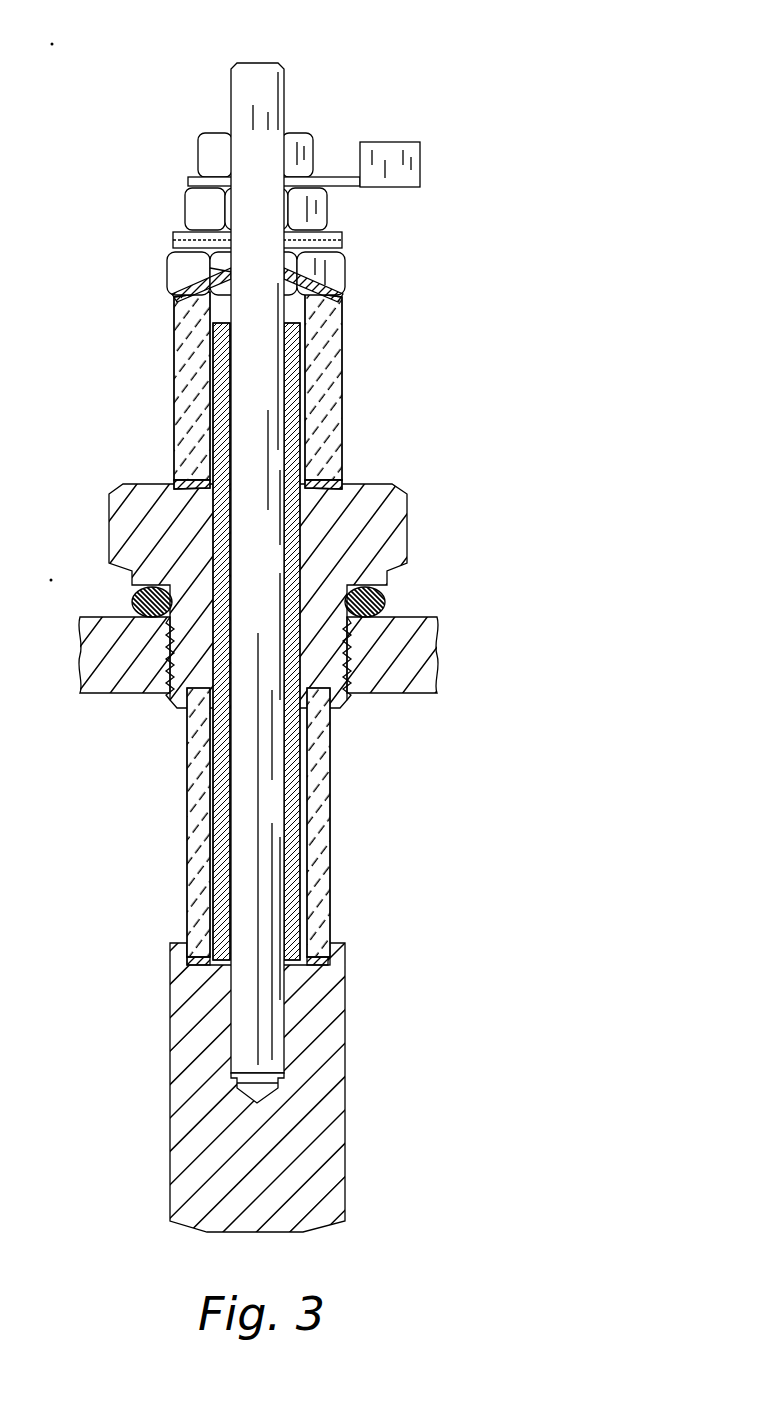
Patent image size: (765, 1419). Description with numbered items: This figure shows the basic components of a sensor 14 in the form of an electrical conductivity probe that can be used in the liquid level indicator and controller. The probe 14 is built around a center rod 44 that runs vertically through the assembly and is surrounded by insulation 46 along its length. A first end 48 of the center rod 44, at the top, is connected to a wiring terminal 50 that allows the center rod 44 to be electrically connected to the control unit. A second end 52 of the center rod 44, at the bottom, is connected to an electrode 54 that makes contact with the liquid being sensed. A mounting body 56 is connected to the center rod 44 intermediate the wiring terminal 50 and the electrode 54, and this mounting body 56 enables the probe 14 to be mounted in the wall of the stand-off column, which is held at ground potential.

The sensor 14 is at (556, 48).
The center rod 44 is at (267, 817).
The insulation 46 is at (193, 353).
The first end 48 is at (178, 108).
The wiring terminal 50 is at (420, 164).
The second end 52 is at (138, 1054).
The electrode 54 is at (262, 1104).
The mounting body 56 is at (393, 527).